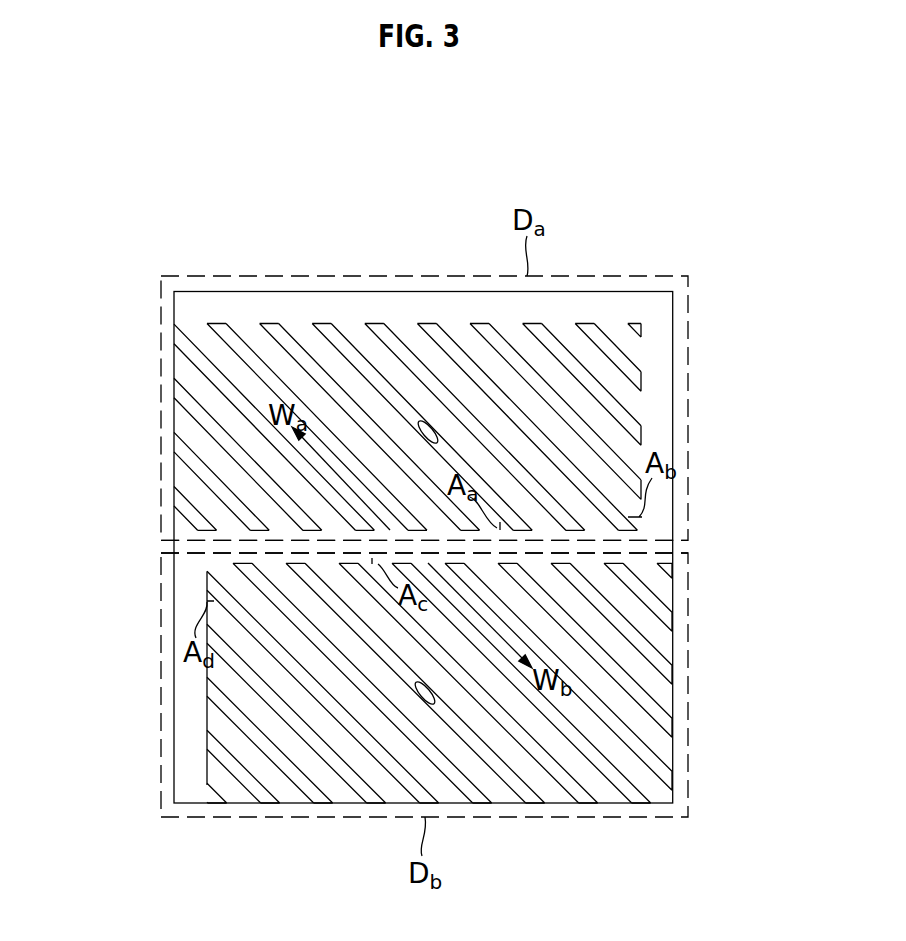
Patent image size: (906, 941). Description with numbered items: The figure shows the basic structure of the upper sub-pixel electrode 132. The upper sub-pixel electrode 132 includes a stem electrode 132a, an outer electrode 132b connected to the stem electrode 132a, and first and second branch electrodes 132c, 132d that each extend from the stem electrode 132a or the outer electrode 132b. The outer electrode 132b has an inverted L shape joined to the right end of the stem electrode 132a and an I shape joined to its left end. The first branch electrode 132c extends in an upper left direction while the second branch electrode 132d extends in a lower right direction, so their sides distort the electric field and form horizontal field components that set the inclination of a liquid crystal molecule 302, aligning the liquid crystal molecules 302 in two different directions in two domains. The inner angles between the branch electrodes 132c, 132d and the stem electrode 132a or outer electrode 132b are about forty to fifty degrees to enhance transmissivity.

The upper sub-pixel electrode 132 is at (632, 232).
The stem electrode 132a is at (610, 547).
The outer electrode 132b is at (317, 308).
The first branch electrode 132c is at (245, 379).
The second branch electrode 132d is at (605, 745).
The liquid crystal molecule 302 is at (432, 424).